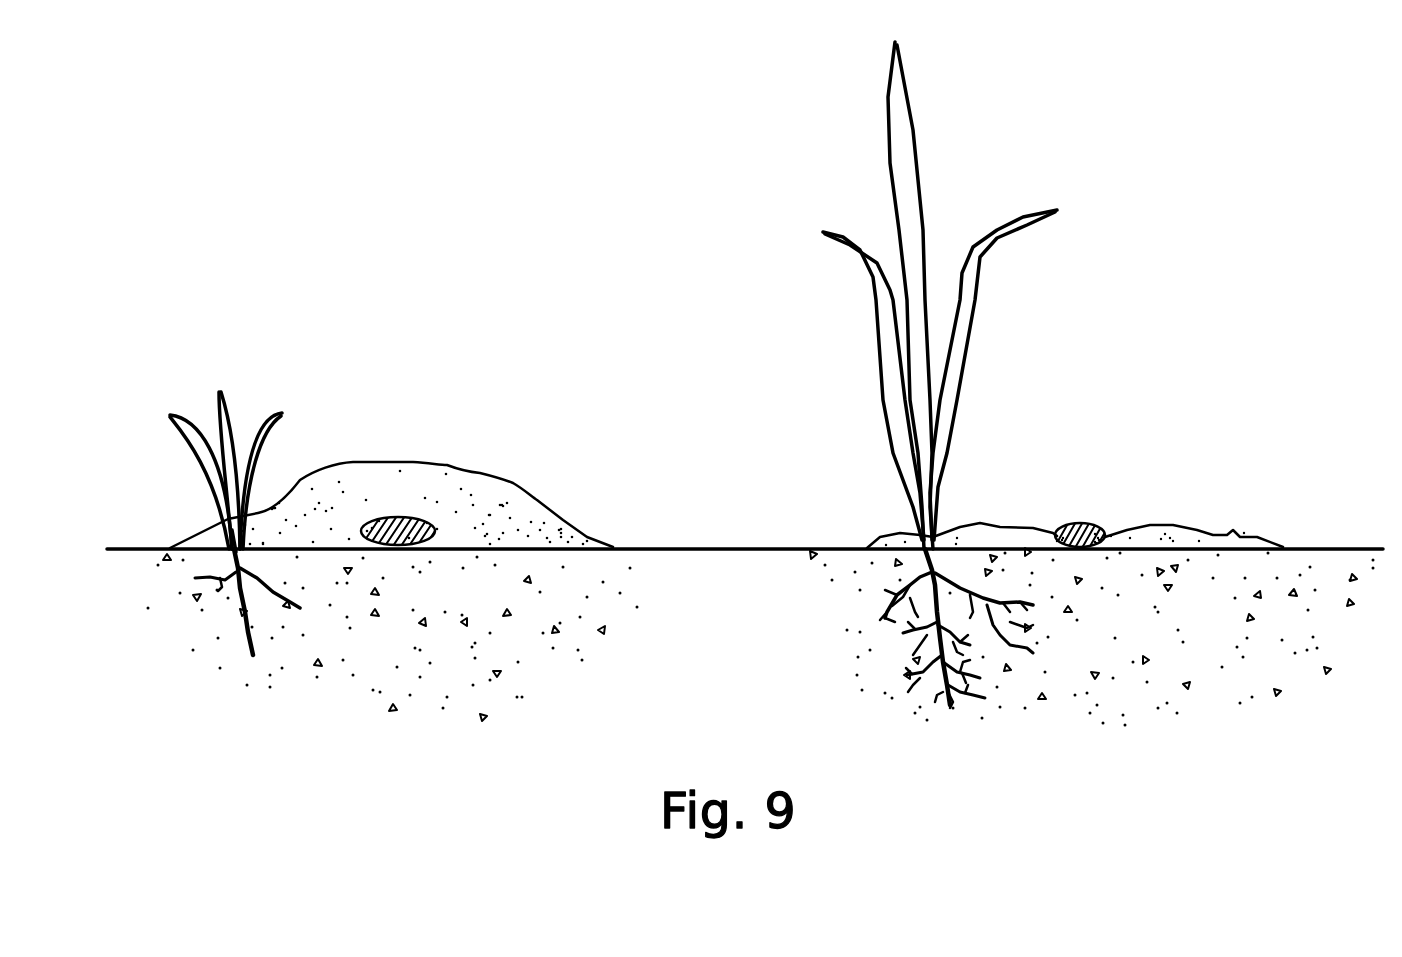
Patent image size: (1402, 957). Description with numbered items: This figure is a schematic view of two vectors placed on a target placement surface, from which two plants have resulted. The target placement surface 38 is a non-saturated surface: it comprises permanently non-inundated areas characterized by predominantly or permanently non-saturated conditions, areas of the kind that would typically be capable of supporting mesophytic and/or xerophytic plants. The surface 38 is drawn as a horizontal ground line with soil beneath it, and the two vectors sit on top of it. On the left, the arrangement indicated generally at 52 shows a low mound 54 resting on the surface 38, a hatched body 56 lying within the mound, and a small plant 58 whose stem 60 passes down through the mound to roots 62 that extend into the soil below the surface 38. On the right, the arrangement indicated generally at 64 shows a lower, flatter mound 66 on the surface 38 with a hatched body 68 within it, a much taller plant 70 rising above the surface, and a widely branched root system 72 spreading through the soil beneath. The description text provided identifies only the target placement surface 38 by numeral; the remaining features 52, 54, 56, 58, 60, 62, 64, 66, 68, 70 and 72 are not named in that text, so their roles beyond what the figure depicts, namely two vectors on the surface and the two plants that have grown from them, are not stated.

The non-saturated target placement surface 38 is at (645, 547).
The first planting arrangement 52 is at (408, 446).
The soil mound 54 is at (517, 505).
The seed tablet 56 is at (420, 517).
The seedling plant 58 is at (200, 443).
The stem 60 is at (225, 534).
The roots 62 is at (195, 578).
The second planting arrangement 64 is at (1082, 461).
The soil mound 66 is at (1232, 533).
The seed tablet 68 is at (1091, 522).
The mature plant 70 is at (910, 220).
The root system 72 is at (890, 607).